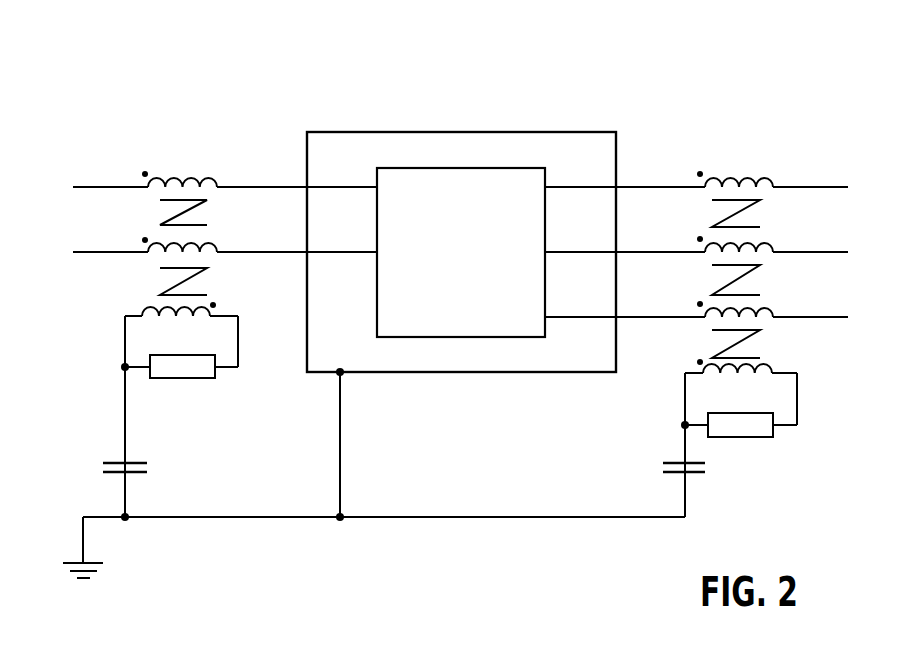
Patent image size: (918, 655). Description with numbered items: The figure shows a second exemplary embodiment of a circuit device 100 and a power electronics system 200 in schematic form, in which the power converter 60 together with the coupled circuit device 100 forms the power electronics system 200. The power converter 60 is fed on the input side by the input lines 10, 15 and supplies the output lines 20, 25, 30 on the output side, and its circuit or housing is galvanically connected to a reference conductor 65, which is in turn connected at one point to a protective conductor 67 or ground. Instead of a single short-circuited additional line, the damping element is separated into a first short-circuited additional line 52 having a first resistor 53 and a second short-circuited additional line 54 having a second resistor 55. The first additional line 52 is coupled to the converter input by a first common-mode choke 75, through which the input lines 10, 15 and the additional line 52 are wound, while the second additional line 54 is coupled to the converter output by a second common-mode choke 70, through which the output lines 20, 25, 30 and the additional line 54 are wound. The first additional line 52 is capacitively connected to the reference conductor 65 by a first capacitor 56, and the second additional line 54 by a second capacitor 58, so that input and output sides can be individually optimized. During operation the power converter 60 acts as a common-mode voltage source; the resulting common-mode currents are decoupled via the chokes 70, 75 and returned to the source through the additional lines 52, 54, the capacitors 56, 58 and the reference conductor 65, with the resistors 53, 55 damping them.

The circuit device 100 is at (447, 291).
The power electronics system 200 is at (200, 96).
The input line 10 is at (277, 186).
The input line 15 is at (270, 251).
The output line 20 is at (670, 186).
The output line 25 is at (663, 251).
The output line 30 is at (662, 316).
The power converter 60 is at (576, 145).
The first common-mode choke 75 is at (148, 312).
The first short-circuited additional line 52 is at (167, 398).
The first resistor 53 is at (200, 370).
The first capacitor 56 is at (113, 460).
The second common-mode choke 70 is at (772, 372).
The second short-circuited additional line 54 is at (725, 432).
The second resistor 55 is at (770, 428).
The second capacitor 58 is at (672, 462).
The reference conductor 65 is at (260, 517).
The protective conductor 67 is at (83, 546).